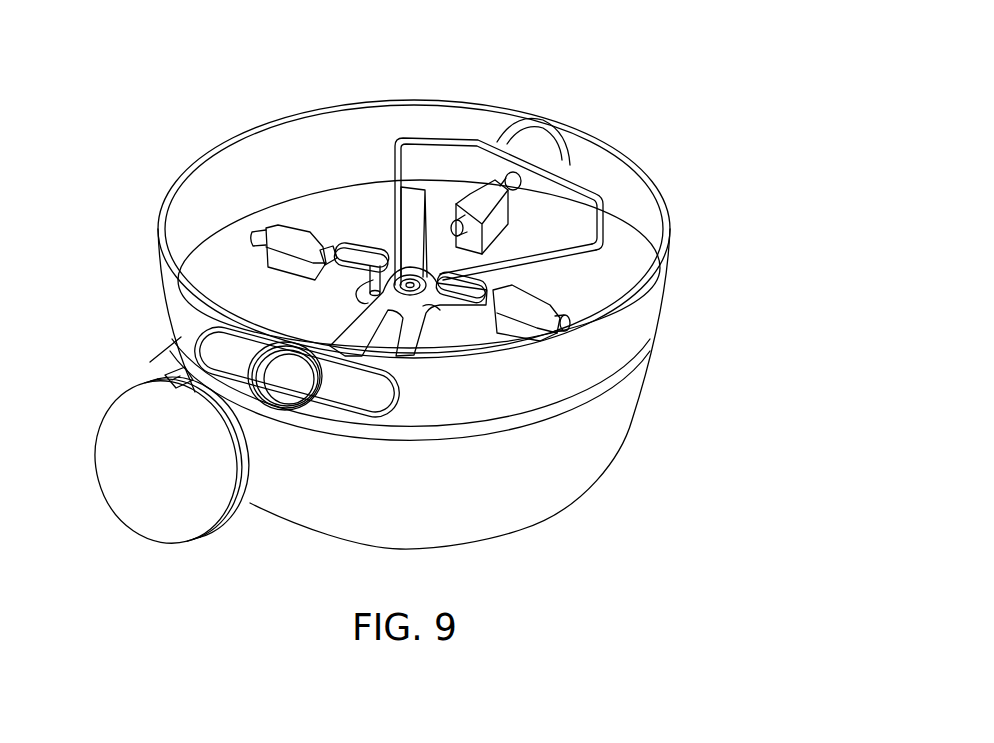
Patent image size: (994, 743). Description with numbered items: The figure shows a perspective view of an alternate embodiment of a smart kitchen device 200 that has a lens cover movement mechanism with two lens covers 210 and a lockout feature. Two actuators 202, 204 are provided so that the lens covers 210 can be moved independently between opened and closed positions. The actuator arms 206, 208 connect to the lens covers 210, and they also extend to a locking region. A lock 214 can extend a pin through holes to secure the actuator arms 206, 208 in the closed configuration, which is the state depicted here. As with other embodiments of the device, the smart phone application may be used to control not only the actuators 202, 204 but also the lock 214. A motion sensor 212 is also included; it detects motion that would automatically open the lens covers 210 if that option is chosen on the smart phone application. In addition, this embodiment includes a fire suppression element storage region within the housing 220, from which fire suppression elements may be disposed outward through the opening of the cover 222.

The device 200 is at (684, 82).
The actuator 202 is at (532, 308).
The actuator 204 is at (283, 240).
The actuator arm 206 is at (413, 217).
The actuator arm 208 is at (530, 253).
The lens covers 210 is at (207, 345).
The motion sensor 212 is at (267, 363).
The lock 214 is at (478, 186).
The housing 220 is at (613, 430).
The cover 222 is at (173, 517).